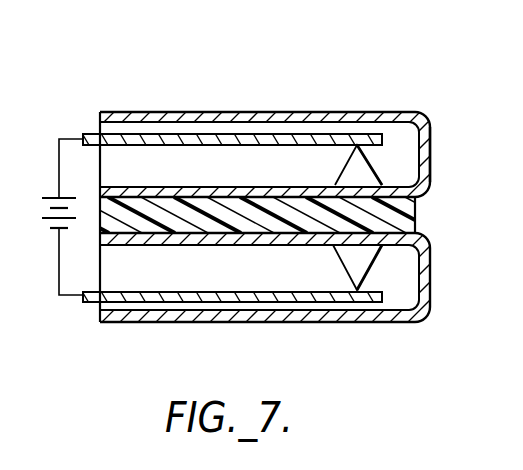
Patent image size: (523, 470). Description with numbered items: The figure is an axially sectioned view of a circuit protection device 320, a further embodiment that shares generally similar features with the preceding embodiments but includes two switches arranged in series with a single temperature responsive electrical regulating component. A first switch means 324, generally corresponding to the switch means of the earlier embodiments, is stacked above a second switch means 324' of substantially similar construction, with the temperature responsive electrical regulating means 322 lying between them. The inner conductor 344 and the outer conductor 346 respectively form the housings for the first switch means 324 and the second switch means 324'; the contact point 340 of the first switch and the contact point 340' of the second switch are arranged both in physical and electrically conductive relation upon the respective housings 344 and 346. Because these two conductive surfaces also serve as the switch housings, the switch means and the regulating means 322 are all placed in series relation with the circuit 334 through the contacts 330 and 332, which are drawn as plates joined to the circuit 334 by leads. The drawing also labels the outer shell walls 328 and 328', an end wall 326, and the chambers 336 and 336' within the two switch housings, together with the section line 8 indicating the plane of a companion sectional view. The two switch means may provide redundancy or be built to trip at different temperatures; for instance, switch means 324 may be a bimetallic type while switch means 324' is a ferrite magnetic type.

The circuit protection device 320 is at (268, 98).
The temperature responsive electrical regulating means 322 is at (426, 212).
The first switch means 324 is at (261, 196).
The second switch means 324' is at (261, 224).
The end wall of housing shell 326 is at (428, 162).
The outer wall layer 328 is at (261, 206).
The outer wall layer (lower) 328' is at (261, 223).
The contact 330 is at (88, 135).
The contact 332 is at (70, 295).
The circuit 334 is at (52, 154).
The upper chamber 336 is at (241, 166).
The lower chamber 336' is at (241, 268).
The contact point 340 is at (324, 165).
The contact point 340' is at (323, 267).
The inner conductor 344 is at (247, 193).
The outer conductor 346 is at (240, 238).
The section line 8- 8 is at (395, 127).